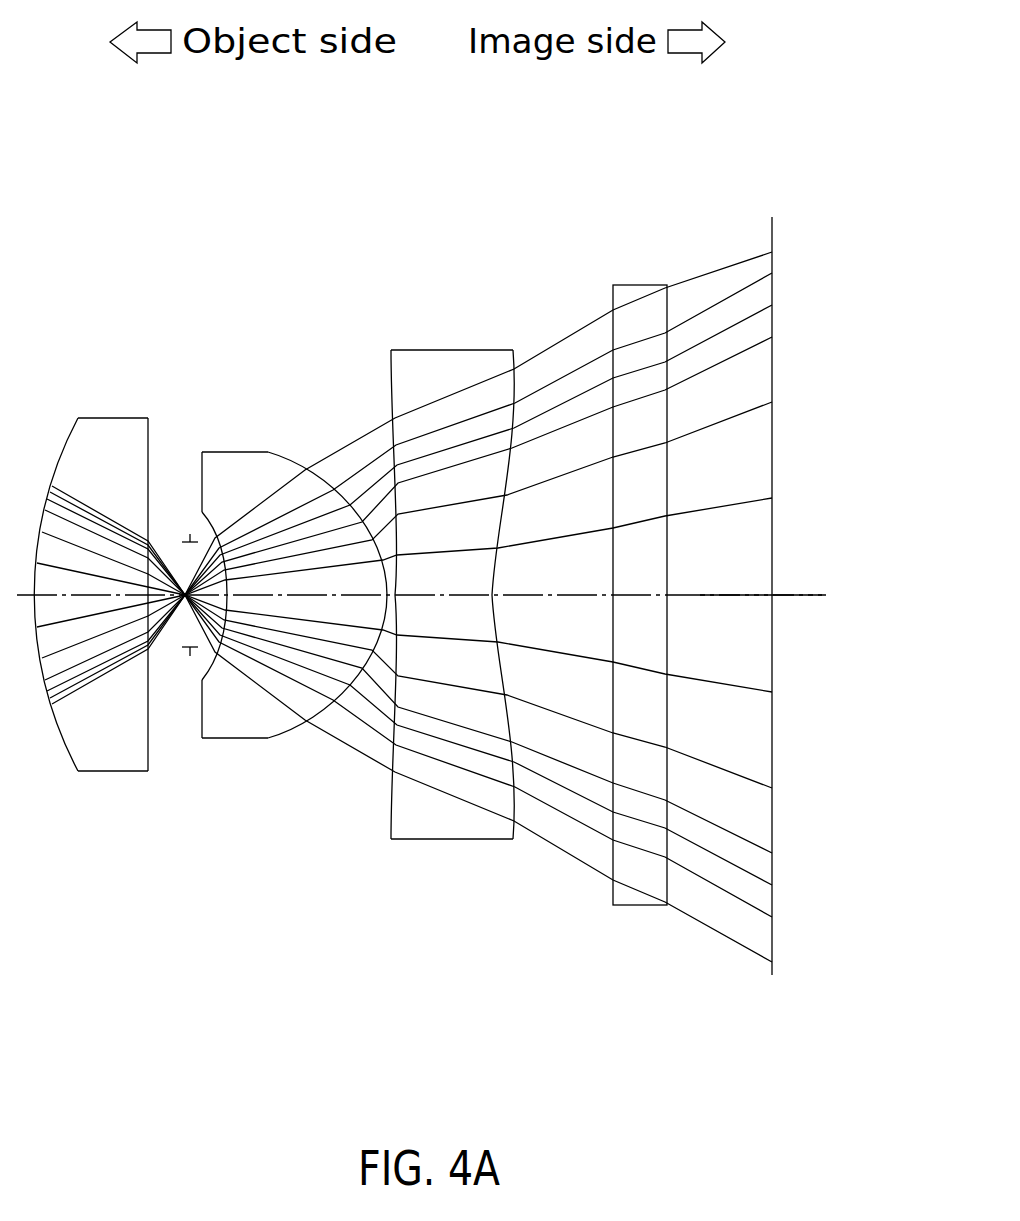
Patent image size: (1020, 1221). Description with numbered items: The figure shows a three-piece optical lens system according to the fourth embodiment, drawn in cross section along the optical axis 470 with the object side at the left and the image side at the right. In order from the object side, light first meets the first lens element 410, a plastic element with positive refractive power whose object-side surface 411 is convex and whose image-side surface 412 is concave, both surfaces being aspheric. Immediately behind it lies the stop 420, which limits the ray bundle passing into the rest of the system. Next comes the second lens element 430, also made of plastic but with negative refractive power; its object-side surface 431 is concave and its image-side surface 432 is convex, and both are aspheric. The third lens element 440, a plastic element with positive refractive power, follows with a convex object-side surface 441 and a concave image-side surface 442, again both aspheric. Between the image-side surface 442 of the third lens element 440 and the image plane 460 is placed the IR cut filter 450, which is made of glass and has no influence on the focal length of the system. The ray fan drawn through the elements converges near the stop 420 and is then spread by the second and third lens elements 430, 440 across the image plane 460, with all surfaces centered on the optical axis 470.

The first lens element 410 is at (100, 605).
The object-side surface of the first lens element 411 is at (68, 748).
The image-side surface of the first lens element 412 is at (150, 720).
The stop 420 is at (186, 522).
The second lens element 430 is at (283, 600).
The object-side surface of the second lens element 431 is at (200, 653).
The image-side surface of the second lens element 432 is at (356, 682).
The third lens element 440 is at (443, 607).
The object-side surface of the third lens element 441 is at (398, 688).
The image-side surface of the third lens element 442 is at (520, 802).
The IR cut filter 450 is at (623, 275).
The image plane 460 is at (765, 248).
The optical axis 470 is at (793, 595).